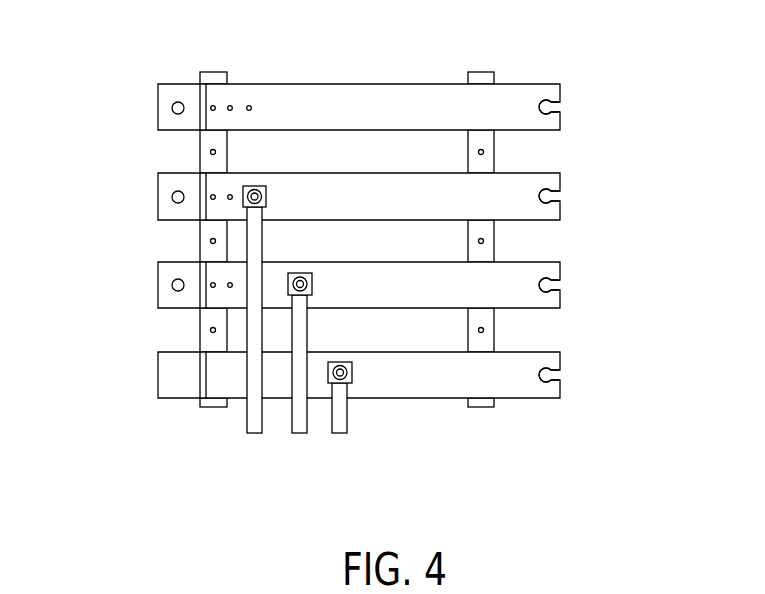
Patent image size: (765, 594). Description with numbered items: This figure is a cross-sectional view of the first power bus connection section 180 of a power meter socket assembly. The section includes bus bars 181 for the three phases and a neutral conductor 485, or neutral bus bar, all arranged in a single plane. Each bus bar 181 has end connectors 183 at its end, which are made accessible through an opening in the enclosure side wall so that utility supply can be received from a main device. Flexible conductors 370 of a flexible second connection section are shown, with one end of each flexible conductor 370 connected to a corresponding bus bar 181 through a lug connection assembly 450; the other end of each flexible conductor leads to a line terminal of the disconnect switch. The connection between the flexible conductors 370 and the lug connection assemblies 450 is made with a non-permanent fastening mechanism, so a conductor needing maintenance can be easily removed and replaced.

The first power bus connection section 180 is at (362, 258).
The bus bars 181 is at (410, 188).
The end connectors 183 is at (533, 110).
The flexible conductors 370 is at (255, 278).
The lug connection assemblies 450 is at (347, 360).
The neutral conductor 485 is at (412, 95).